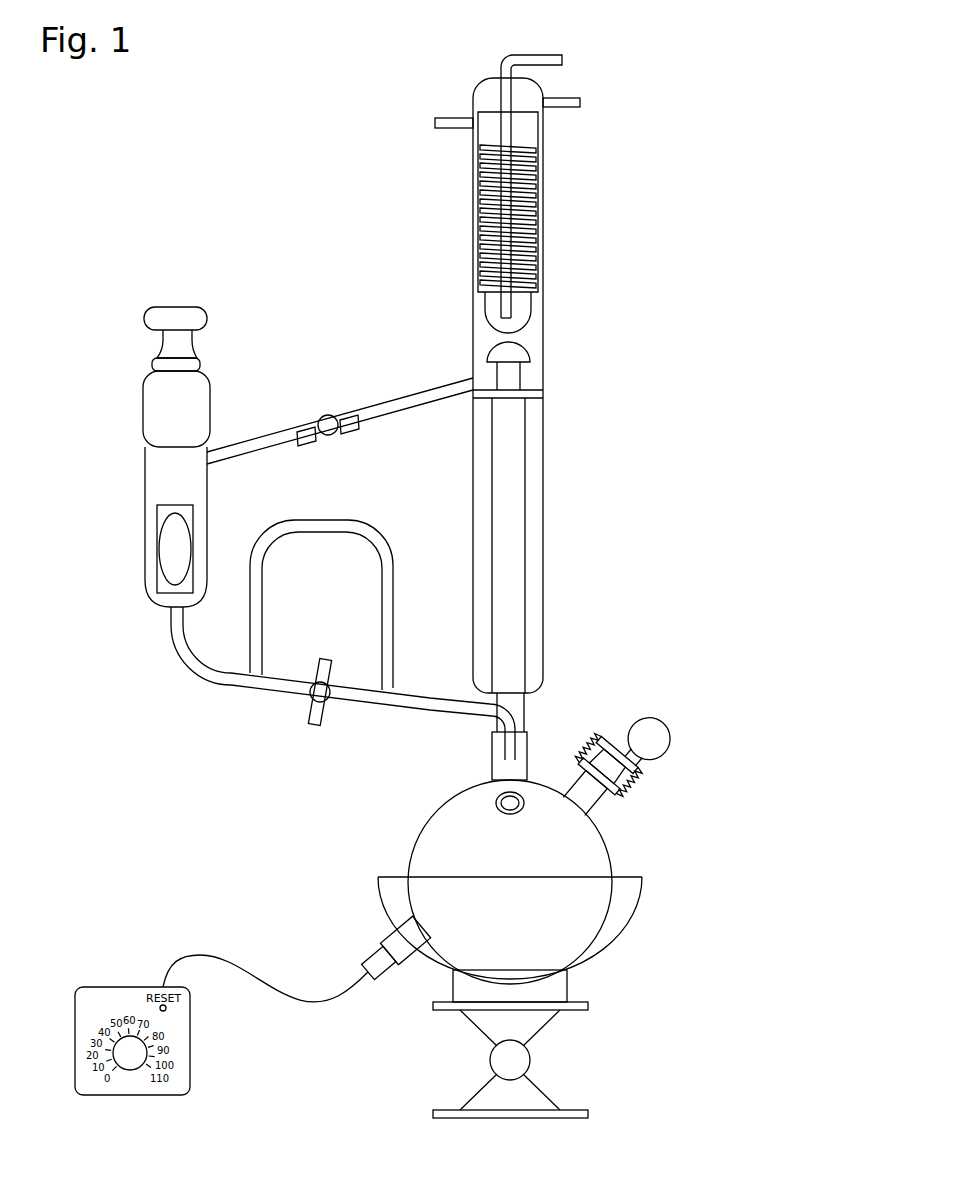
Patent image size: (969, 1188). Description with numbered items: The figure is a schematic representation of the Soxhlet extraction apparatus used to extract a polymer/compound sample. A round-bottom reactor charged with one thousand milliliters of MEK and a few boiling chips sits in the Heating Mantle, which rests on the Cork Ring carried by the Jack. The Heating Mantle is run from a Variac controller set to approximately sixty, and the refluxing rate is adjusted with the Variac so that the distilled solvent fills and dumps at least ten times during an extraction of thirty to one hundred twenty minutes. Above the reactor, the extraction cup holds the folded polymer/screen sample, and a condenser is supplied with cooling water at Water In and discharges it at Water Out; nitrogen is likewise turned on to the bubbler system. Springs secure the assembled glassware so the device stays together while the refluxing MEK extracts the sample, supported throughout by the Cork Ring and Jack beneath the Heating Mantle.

The water inlet to condenser Water In is at (590, 60).
The water outlet from condenser Water Out is at (610, 103).
The springs Springs is at (648, 790).
The heating mantle Heating Mantle is at (630, 927).
The cork ring Cork Ring is at (570, 985).
The jack Jack is at (530, 1060).